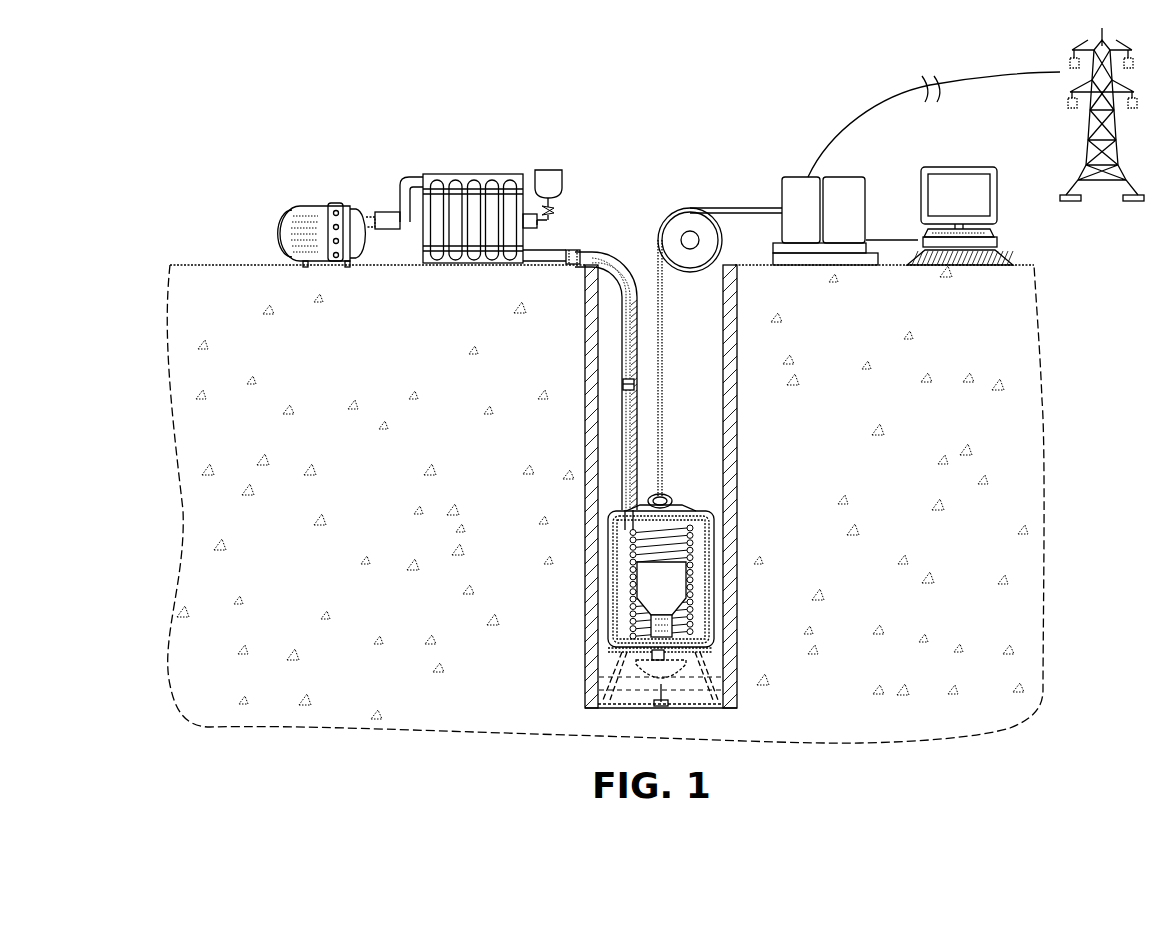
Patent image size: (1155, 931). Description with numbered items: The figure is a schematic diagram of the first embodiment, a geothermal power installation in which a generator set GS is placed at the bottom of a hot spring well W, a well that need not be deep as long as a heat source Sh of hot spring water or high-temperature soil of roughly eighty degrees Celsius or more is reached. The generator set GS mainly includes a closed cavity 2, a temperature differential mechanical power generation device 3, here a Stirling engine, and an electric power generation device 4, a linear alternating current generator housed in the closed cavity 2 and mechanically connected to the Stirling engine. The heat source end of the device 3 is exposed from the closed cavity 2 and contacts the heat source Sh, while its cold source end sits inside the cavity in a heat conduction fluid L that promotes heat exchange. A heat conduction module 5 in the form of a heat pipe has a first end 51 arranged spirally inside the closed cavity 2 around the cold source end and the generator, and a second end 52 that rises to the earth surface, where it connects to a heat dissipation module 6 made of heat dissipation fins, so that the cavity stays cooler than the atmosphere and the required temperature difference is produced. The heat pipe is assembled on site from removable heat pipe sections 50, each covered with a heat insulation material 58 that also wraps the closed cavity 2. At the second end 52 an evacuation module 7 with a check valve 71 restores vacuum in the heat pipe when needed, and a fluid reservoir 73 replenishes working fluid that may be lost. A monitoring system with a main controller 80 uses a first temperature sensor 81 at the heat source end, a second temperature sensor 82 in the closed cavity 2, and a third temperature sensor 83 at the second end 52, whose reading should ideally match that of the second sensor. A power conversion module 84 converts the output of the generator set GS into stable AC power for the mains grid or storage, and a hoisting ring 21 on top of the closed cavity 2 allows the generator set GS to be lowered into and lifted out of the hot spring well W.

The evacuation module 7 is at (329, 152).
The heat dissipation module 6 is at (443, 152).
The fluid reservoir 73 is at (548, 170).
The second end 52 is at (574, 258).
The power conversion module 84 is at (800, 177).
The main controller 80 is at (1030, 229).
The check valve 71 is at (386, 230).
The third temperature sensor 83 is at (436, 262).
The heat conduction module 5 is at (612, 378).
The heat insulation material 58 is at (625, 417).
The heat pipe section 50 is at (625, 456).
The hoisting ring 21 is at (667, 492).
The hot spring well W is at (712, 353).
The generator set GS is at (712, 492).
The second temperature sensor 82 is at (716, 512).
The closed cavity 2 is at (600, 552).
The heat conduction fluid L is at (604, 592).
The electric power generation device 4 is at (692, 565).
The first end 51 is at (684, 604).
The temperature differential mechanical power generation device 3 is at (670, 632).
The first temperature sensor 81 is at (645, 650).
The heat source Sh is at (752, 668).